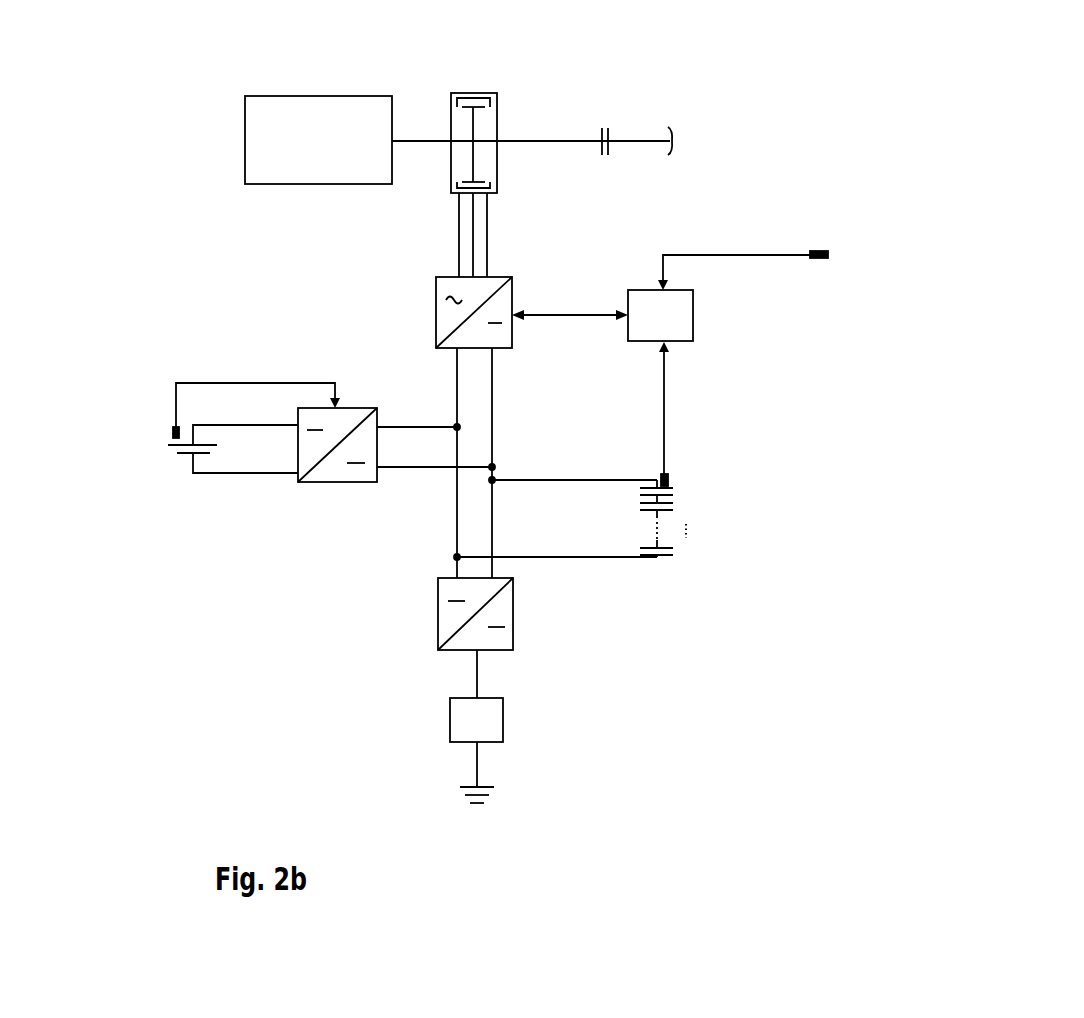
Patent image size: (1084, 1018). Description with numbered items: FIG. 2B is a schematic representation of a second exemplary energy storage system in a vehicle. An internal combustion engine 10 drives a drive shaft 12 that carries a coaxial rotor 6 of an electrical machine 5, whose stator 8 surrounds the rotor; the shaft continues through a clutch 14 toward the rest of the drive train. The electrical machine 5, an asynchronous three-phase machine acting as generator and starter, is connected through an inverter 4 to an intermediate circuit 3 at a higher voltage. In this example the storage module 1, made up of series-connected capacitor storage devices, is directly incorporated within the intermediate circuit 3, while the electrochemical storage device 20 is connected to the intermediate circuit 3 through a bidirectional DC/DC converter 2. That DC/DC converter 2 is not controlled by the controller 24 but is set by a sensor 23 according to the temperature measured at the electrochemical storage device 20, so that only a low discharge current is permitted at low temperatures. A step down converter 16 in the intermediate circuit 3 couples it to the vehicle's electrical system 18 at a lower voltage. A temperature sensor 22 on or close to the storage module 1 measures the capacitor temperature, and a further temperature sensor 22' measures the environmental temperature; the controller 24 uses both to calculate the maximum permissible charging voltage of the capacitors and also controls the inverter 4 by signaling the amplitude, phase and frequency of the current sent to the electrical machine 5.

The storage module 1 is at (665, 560).
The DC/DC converter 2 is at (337, 482).
The intermediate circuit 3 is at (476, 392).
The inverter 4 is at (436, 310).
The electrical machine 5 is at (603, 149).
The rotor 6 is at (476, 157).
The stator 8 is at (497, 193).
The internal combustion engine 10 is at (298, 151).
The drive shaft 12 is at (550, 141).
The clutch 14 is at (608, 128).
The step down converter 16 is at (513, 613).
The vehicle's electrical system 18 is at (503, 720).
The electrochemical storage device 20 is at (183, 455).
The temperature sensor 22 is at (752, 414).
The temperature sensor 22' is at (771, 226).
The sensor 23 is at (168, 433).
The controller 24 is at (693, 315).